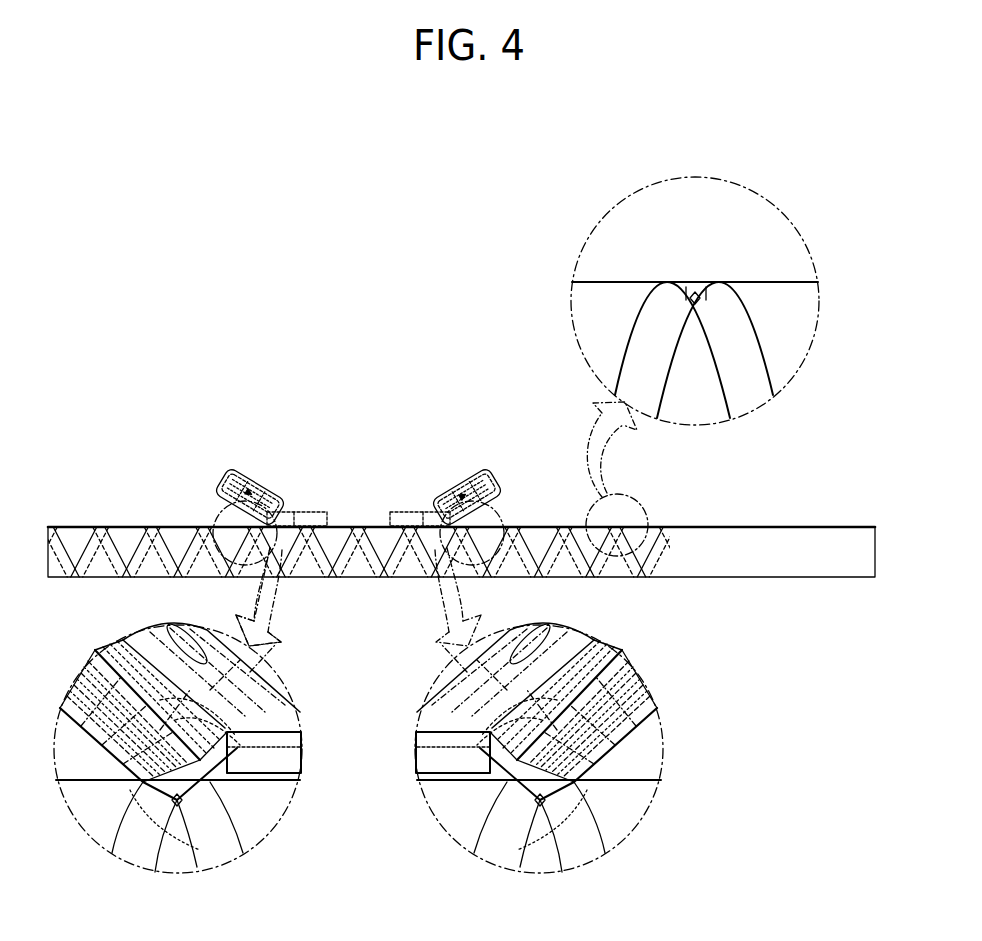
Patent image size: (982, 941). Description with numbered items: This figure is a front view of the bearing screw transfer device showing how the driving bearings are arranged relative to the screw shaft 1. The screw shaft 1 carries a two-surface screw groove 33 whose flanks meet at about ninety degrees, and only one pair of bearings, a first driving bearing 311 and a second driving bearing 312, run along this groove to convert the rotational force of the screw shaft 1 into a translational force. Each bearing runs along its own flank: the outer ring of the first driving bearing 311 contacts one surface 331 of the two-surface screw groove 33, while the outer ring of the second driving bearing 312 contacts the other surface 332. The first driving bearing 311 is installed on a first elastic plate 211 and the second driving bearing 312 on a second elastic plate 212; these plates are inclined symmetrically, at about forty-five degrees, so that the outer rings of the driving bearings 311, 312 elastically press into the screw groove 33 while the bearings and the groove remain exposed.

The screw shaft 1 is at (778, 565).
The first elastic plate 211 is at (240, 468).
The second elastic plate 212 is at (478, 470).
The first driving bearing 311 is at (222, 477).
The second driving bearing 312 is at (495, 477).
The two-surface screw groove 33 is at (695, 301).
The one surface of the two-surface screw groove 331 is at (707, 295).
The other surface of the two-surface screw groove 332 is at (683, 295).